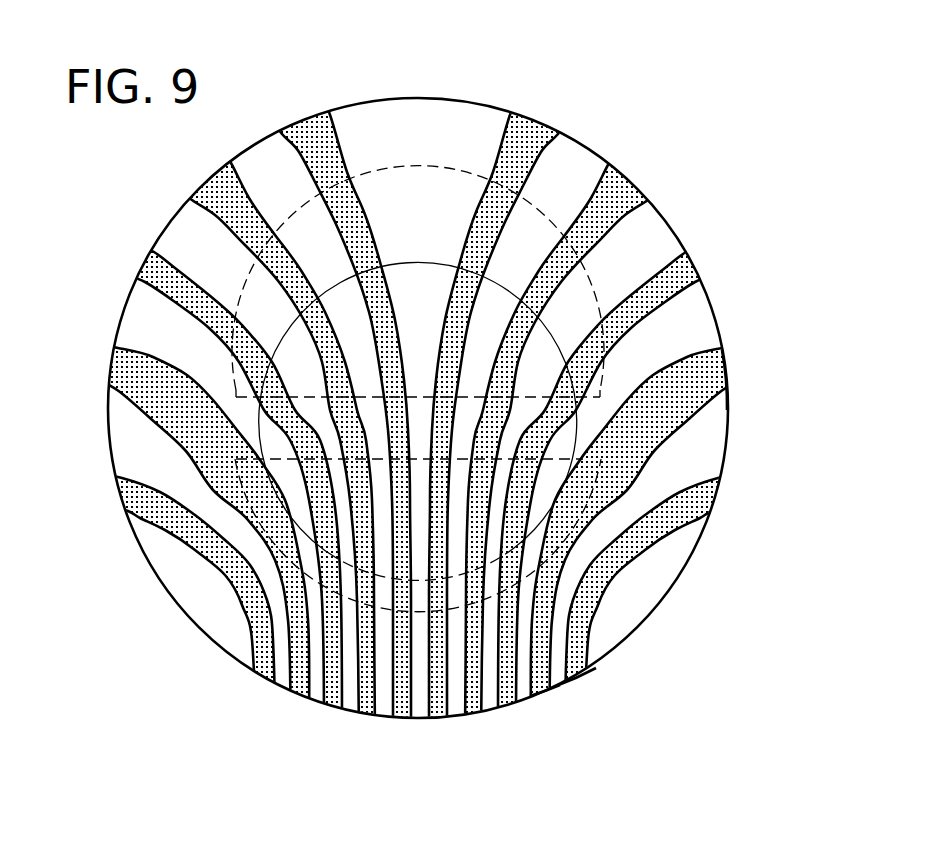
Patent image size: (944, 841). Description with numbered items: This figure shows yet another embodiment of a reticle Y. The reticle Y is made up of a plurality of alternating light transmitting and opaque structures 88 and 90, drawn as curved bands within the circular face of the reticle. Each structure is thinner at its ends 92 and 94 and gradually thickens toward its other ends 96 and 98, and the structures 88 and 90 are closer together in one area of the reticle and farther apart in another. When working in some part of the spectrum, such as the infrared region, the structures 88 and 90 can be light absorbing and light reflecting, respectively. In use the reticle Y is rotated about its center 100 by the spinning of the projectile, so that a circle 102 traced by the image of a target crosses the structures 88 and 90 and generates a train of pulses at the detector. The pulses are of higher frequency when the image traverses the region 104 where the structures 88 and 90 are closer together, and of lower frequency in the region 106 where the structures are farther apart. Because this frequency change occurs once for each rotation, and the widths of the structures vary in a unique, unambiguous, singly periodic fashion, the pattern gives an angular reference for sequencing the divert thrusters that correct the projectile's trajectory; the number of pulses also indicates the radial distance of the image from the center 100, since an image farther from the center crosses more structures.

The reticle Y is at (596, 131).
The light transmitting structure 88 is at (636, 564).
The opaque structure 90 is at (698, 336).
The thin end of structure 92 is at (575, 676).
The thin end of structure 94 is at (556, 682).
The thick end of structure 96 is at (735, 372).
The thick end of structure 98 is at (708, 312).
The center 100 is at (418, 428).
The circle 102 is at (430, 263).
The region of closer structures 104 is at (240, 490).
The region of farther structures 106 is at (257, 318).